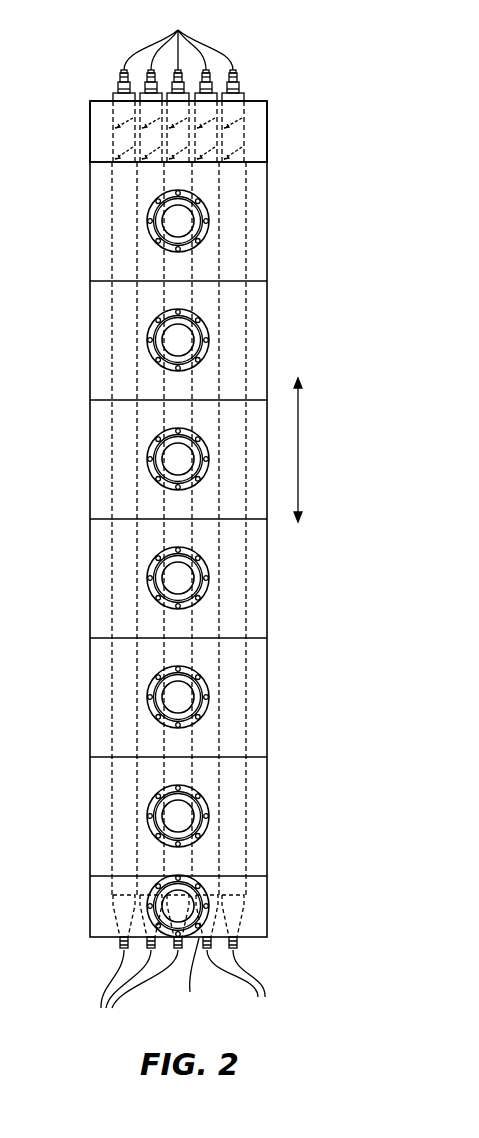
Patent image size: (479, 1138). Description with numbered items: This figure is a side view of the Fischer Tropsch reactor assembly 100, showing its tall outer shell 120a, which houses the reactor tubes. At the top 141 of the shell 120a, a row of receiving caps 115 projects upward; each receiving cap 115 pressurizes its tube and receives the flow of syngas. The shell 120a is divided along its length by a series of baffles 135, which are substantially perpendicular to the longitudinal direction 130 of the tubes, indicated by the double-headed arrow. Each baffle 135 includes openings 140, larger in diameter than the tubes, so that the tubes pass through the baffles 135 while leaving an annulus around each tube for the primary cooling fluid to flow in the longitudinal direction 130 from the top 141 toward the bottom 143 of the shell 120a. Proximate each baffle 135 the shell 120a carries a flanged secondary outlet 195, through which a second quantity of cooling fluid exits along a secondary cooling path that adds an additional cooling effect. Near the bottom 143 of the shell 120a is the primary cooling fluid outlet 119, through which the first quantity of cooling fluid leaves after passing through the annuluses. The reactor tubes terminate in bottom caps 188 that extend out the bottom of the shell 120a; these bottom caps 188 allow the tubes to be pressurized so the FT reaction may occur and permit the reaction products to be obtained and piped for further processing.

The Fischer Tropsch reactor 100 is at (270, 925).
The receiving cap 115 is at (117, 246).
The primary cooling fluid outlet 119 is at (199, 978).
The outer shell 120a is at (268, 133).
The longitudinal direction 130 is at (298, 448).
The baffle 135 is at (248, 163).
The opening 140 is at (112, 160).
The top of the shell 141 is at (257, 100).
The bottom of the shell 143 is at (258, 938).
The bottom cap 188 is at (185, 992).
The secondary outlet 195 is at (185, 221).